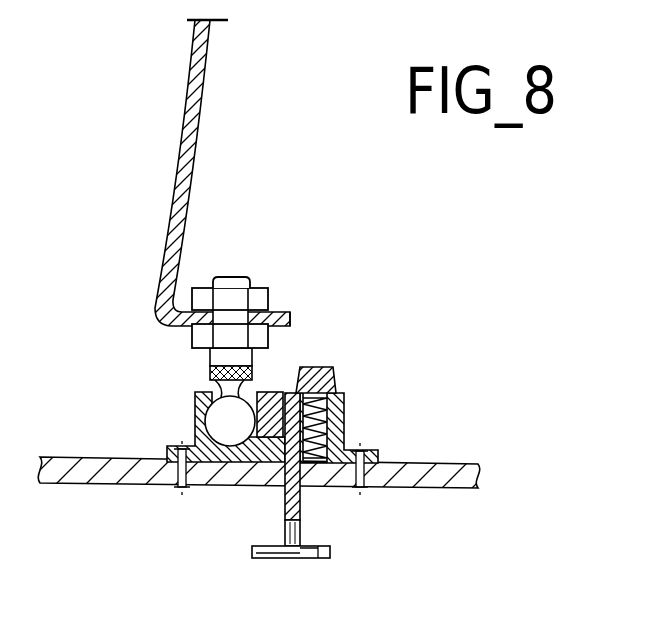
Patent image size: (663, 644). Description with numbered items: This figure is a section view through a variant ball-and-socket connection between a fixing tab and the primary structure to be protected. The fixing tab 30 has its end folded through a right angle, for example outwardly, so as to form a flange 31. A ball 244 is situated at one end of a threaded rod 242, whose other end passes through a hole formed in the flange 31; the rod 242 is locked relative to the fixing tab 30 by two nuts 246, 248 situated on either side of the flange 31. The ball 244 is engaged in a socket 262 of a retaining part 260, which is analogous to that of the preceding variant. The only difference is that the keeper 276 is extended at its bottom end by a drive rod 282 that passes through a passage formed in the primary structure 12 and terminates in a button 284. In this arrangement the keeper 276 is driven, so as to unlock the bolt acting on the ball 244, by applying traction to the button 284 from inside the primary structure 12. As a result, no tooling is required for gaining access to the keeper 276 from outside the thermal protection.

The primary structure 12 is at (402, 465).
The fixing tab 30 is at (181, 131).
The flange 31 is at (293, 312).
The threaded rod 242 is at (210, 358).
The ball 244 is at (200, 419).
The nut 246 is at (265, 297).
The nut 248 is at (268, 337).
The retaining part 260 is at (252, 452).
The socket 262 is at (222, 462).
The keeper 276 is at (338, 378).
The drive rod 282 is at (298, 508).
The button 284 is at (300, 558).